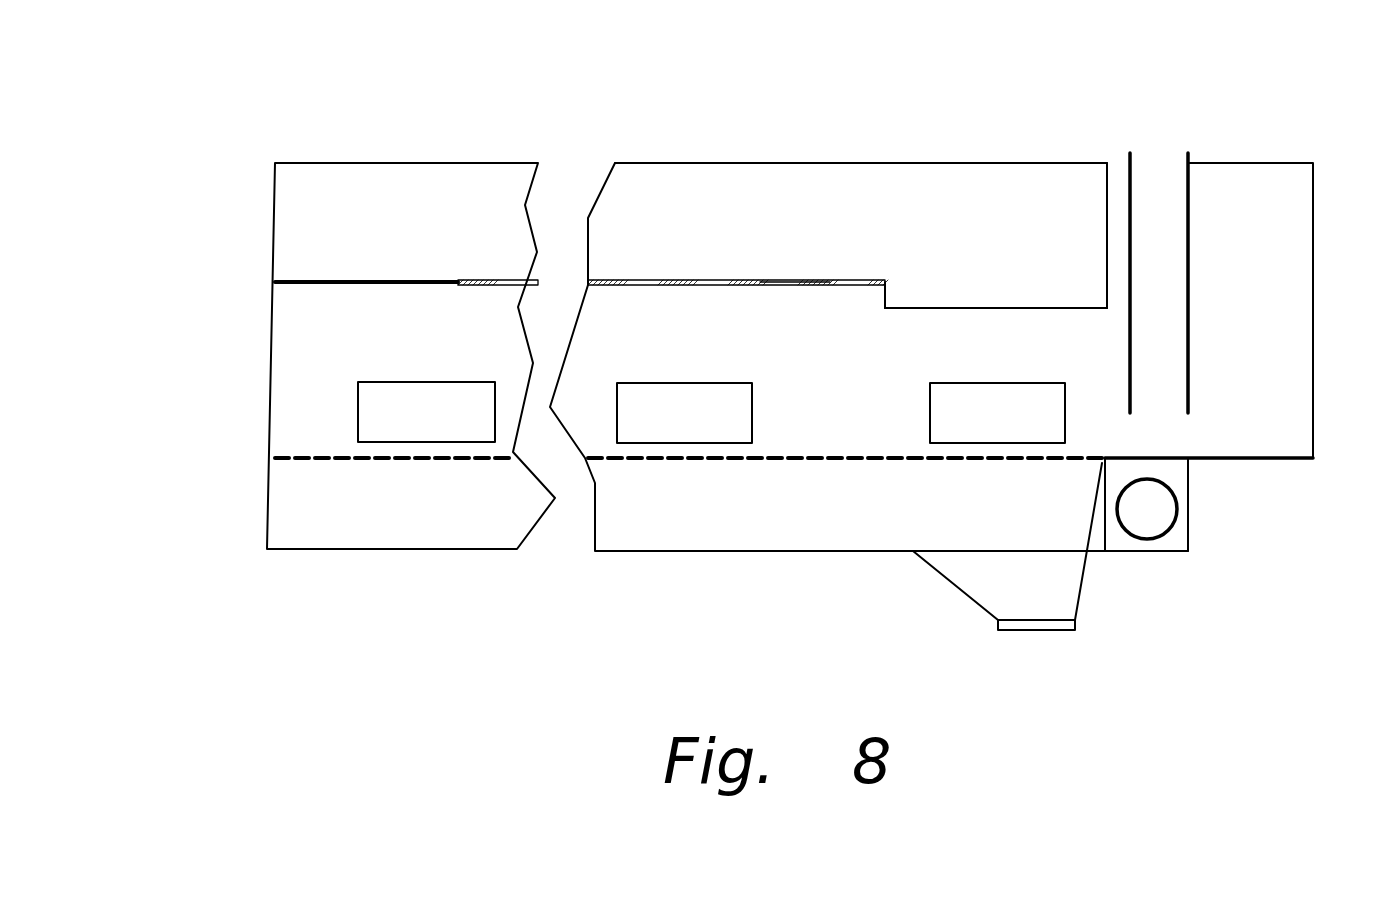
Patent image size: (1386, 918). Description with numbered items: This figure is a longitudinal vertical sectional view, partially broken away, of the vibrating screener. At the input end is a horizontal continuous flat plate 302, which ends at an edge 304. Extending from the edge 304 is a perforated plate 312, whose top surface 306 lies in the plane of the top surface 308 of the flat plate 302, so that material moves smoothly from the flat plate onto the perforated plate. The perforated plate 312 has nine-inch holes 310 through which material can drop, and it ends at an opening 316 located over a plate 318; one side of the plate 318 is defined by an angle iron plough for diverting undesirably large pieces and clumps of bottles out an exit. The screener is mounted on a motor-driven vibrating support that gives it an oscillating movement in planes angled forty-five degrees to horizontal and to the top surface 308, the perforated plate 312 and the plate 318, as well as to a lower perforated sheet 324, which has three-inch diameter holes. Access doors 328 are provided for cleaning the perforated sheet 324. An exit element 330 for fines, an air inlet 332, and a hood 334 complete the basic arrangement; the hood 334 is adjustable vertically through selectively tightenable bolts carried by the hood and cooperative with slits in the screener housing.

The horizontal continuous flat plate 302 is at (327, 285).
The edge 304 is at (458, 280).
The top surface 306 is at (790, 280).
The top surface 308 is at (387, 280).
The holes 310 is at (823, 290).
The perforated plate 312 is at (717, 280).
The opening 316 is at (1030, 251).
The plate 318 is at (955, 312).
The perforated sheet 324 is at (320, 460).
The access doors 328 is at (742, 439).
The exit element 330 is at (1070, 605).
The air inlet 332 is at (1147, 509).
The hood 334 is at (1160, 171).